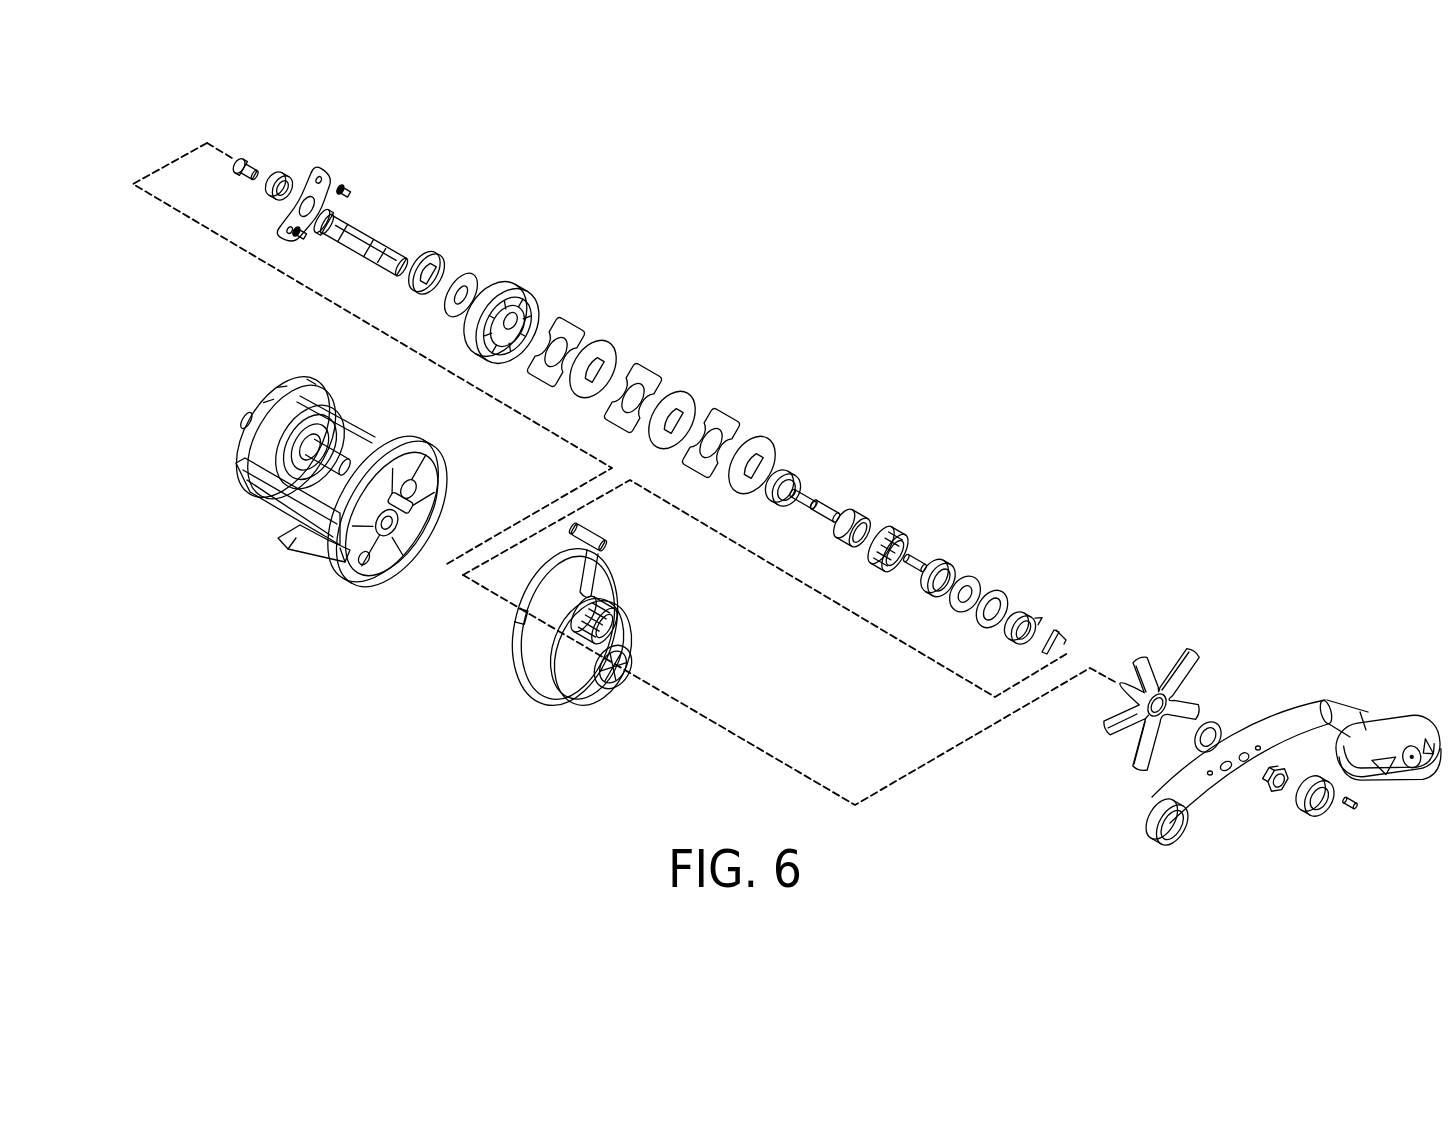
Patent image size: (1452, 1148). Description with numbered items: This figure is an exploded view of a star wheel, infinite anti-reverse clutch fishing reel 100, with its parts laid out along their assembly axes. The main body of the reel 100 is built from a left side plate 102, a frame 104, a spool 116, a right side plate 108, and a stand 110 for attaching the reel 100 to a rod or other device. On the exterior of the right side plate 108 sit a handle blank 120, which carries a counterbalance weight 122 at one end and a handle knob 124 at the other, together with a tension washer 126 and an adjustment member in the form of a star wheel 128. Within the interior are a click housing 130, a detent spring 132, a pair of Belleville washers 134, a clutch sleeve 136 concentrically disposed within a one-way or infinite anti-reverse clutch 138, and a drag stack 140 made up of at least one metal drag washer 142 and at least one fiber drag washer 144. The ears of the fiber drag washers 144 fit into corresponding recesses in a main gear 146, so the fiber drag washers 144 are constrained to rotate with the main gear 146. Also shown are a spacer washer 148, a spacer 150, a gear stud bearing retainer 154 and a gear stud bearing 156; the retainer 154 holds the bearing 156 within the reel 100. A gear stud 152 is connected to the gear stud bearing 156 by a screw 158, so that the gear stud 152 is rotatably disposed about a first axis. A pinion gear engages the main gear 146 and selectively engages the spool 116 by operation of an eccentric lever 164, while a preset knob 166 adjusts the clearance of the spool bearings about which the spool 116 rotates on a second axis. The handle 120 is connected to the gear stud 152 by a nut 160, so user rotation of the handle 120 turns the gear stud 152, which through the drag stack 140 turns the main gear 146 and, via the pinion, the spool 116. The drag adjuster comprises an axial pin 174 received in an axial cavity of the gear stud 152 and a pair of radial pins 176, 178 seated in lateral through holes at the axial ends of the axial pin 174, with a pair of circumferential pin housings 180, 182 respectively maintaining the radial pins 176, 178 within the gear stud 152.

The reel 100 is at (605, 190).
The left side plate 102 is at (255, 405).
The frame 104 is at (248, 497).
The right side plate 108 is at (553, 687).
The stand 110 is at (293, 560).
The spool 116 is at (348, 440).
The handle blank 120 is at (1152, 800).
The counterbalance weight 122 is at (1150, 840).
The handle knob 124 is at (1417, 767).
The tension washer 126 is at (1210, 720).
The star wheel 128 is at (1190, 653).
The click housing 130 is at (1028, 615).
The detent spring 132 is at (1062, 632).
The Belleville washers 134 is at (1000, 597).
The clutch sleeve 136 is at (853, 513).
The one-way clutch 138 is at (895, 528).
The drag stack 140 is at (818, 370).
The metal drag washer 142 is at (594, 352).
The fiber drag washer 144 is at (562, 320).
The main gear 146 is at (509, 285).
The spacer washer 148 is at (461, 278).
The spacer 150 is at (425, 262).
The gear stud 152 is at (368, 225).
The gear stud bearing retainer 154 is at (327, 172).
The gear stud bearing 156 is at (280, 176).
The screw 158 is at (252, 162).
The nut 160 is at (1278, 792).
The eccentric lever 164 is at (603, 542).
The preset knob 166 is at (630, 608).
The axial pin 174 is at (830, 487).
The radial pin 176 is at (918, 557).
The radial pin 178 is at (823, 488).
The circumferential pin housing 180 is at (943, 565).
The circumferential pin housing 182 is at (784, 460).